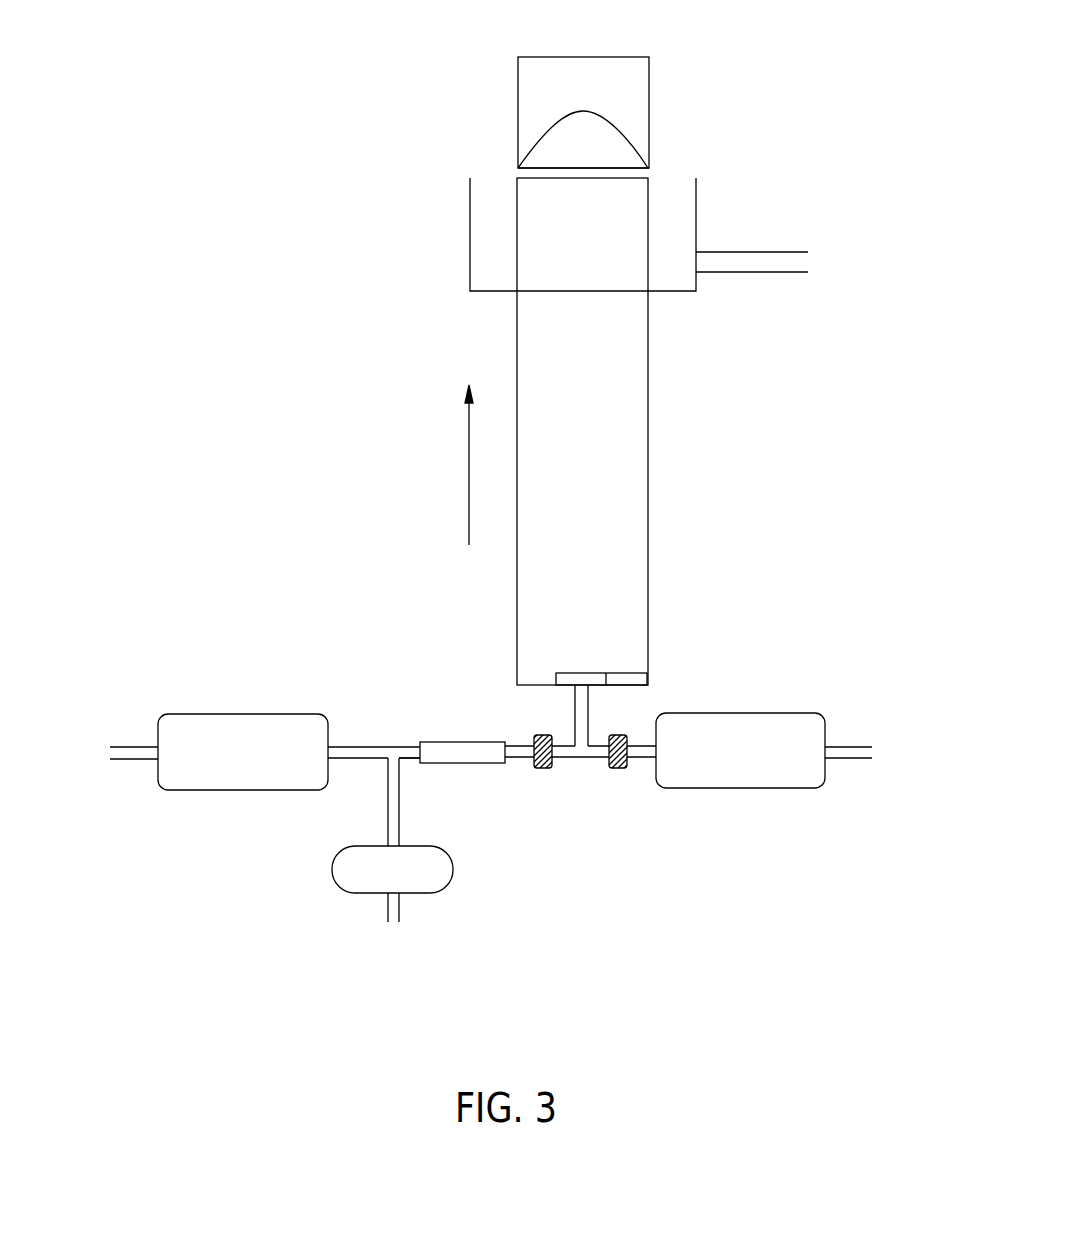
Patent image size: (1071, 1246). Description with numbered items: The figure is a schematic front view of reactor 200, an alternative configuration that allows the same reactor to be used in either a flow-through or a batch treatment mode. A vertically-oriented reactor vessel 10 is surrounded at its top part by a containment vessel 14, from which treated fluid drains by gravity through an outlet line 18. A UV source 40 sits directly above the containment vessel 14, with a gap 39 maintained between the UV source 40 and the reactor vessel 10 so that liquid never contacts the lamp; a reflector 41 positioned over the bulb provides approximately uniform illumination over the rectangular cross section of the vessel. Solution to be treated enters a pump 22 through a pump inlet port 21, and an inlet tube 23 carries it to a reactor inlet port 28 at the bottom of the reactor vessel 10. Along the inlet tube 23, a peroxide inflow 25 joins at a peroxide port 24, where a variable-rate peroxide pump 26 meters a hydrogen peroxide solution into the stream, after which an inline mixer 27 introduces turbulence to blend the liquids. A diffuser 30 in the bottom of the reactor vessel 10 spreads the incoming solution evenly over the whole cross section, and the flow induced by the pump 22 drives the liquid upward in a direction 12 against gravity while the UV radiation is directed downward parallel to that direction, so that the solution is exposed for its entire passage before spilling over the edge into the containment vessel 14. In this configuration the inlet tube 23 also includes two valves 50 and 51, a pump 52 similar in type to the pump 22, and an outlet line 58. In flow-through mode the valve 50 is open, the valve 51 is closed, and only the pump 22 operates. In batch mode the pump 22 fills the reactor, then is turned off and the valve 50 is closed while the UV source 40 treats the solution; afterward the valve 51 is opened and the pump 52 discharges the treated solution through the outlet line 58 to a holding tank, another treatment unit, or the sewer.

The reactor 200 is at (749, 48).
The reactor vessel 10 is at (596, 450).
The direction 12 is at (469, 463).
The containment vessel 14 is at (470, 240).
The outlet line 18 is at (763, 252).
The pump inlet port 21 is at (158, 741).
The pump 22 is at (202, 790).
The inlet tube 23 is at (364, 747).
The peroxide port 24 is at (400, 760).
The peroxide inflow 25 is at (388, 798).
The peroxide pump 26 is at (453, 870).
The inline mixer 27 is at (475, 763).
The reactor inlet port 28 is at (590, 691).
The diffuser 30 is at (612, 673).
The gap 39 is at (518, 168).
The UV source 40 is at (570, 92).
The reflector 41 is at (626, 131).
The valve 50 is at (545, 768).
The valve 51 is at (620, 768).
The pump 52 is at (786, 713).
The outlet line 58 is at (856, 758).